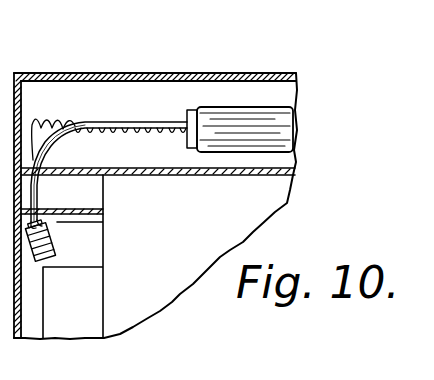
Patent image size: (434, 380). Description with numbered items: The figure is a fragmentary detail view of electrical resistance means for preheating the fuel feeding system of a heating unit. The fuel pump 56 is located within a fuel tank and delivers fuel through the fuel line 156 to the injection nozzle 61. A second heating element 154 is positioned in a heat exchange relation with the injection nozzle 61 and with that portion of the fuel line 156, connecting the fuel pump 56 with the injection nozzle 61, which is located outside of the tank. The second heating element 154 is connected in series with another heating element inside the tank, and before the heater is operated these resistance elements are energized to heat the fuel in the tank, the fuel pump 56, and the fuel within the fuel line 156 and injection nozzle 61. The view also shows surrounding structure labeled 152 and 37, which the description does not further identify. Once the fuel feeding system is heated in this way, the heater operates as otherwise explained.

The housing wall 152 is at (130, 90).
The fuel pump 56 is at (235, 110).
The fuel line 156 is at (37, 182).
The second heating element 154 is at (46, 178).
The compartment 37 is at (88, 220).
The injection nozzle 61 is at (57, 238).